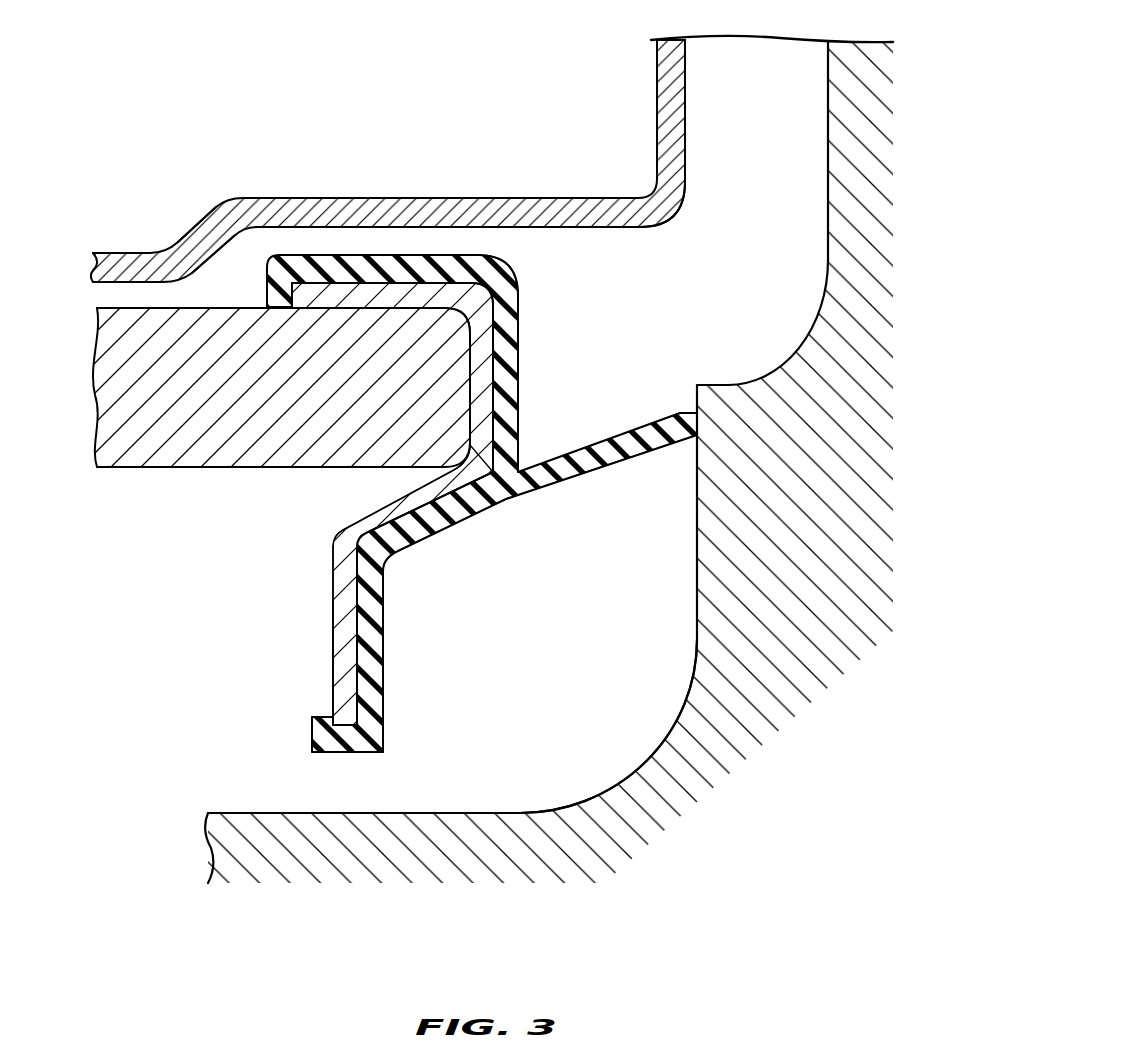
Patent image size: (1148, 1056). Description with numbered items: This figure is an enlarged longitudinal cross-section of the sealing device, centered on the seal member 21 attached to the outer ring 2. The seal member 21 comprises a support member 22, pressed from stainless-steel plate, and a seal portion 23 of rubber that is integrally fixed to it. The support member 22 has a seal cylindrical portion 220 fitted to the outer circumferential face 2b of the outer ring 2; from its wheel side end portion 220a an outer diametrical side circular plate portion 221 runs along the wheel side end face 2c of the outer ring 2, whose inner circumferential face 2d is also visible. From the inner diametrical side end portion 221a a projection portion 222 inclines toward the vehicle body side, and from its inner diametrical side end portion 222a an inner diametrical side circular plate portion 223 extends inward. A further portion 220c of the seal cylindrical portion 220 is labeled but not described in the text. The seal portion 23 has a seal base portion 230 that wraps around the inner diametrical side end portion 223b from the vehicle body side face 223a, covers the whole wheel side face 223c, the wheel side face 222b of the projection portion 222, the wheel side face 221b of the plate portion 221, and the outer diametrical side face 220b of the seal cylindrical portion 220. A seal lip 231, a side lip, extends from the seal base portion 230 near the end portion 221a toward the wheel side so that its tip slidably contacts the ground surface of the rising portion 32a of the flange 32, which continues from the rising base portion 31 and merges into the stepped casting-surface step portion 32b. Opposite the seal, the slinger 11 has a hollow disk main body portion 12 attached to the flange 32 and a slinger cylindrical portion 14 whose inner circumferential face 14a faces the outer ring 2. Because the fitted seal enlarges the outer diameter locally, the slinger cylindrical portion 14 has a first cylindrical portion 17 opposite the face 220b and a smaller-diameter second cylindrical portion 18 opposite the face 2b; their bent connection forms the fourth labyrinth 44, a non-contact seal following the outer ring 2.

The outer ring 2 is at (255, 377).
The outer circumferential face 2b is at (118, 305).
The wheel side end face 2c is at (469, 358).
The inner circumferential face 2d is at (108, 469).
The slinger 11 is at (657, 49).
The main body portion 12 is at (656, 100).
The slinger cylindrical portion 14 is at (388, 168).
The inner circumferential face 14a is at (610, 229).
The first cylindrical portion 17 is at (520, 199).
The second cylindrical portion 18 is at (110, 257).
The fourth labyrinth 44 is at (233, 253).
The seal member 21 is at (450, 447).
The support member 22 is at (420, 434).
The seal portion 23 is at (450, 447).
The seal cylindrical portion 220 is at (372, 290).
The wheel side end portion 220a is at (478, 298).
The outer diametrical side face 220b is at (305, 268).
The inner end portion of first seal portion 220c is at (285, 293).
The outer diametrical side circular plate portion 221 is at (500, 350).
The inner diametrical side end portion 221a is at (480, 471).
The wheel side face 221b is at (520, 392).
The projection portion 222 is at (410, 488).
The inner diametrical side end portion 222a is at (334, 528).
The wheel side face 222b is at (463, 530).
The inner diametrical side circular plate portion 223 is at (345, 598).
The vehicle body side face 223a is at (333, 665).
The inner diametrical side end portion 223b is at (318, 717).
The wheel side face 223c is at (372, 623).
The seal base portion 230 is at (440, 268).
The seal lip 231 is at (623, 410).
The rising base portion 31 is at (592, 862).
The flange 32 is at (584, 462).
The rising portion 32a is at (696, 570).
The step portion 32b is at (827, 183).